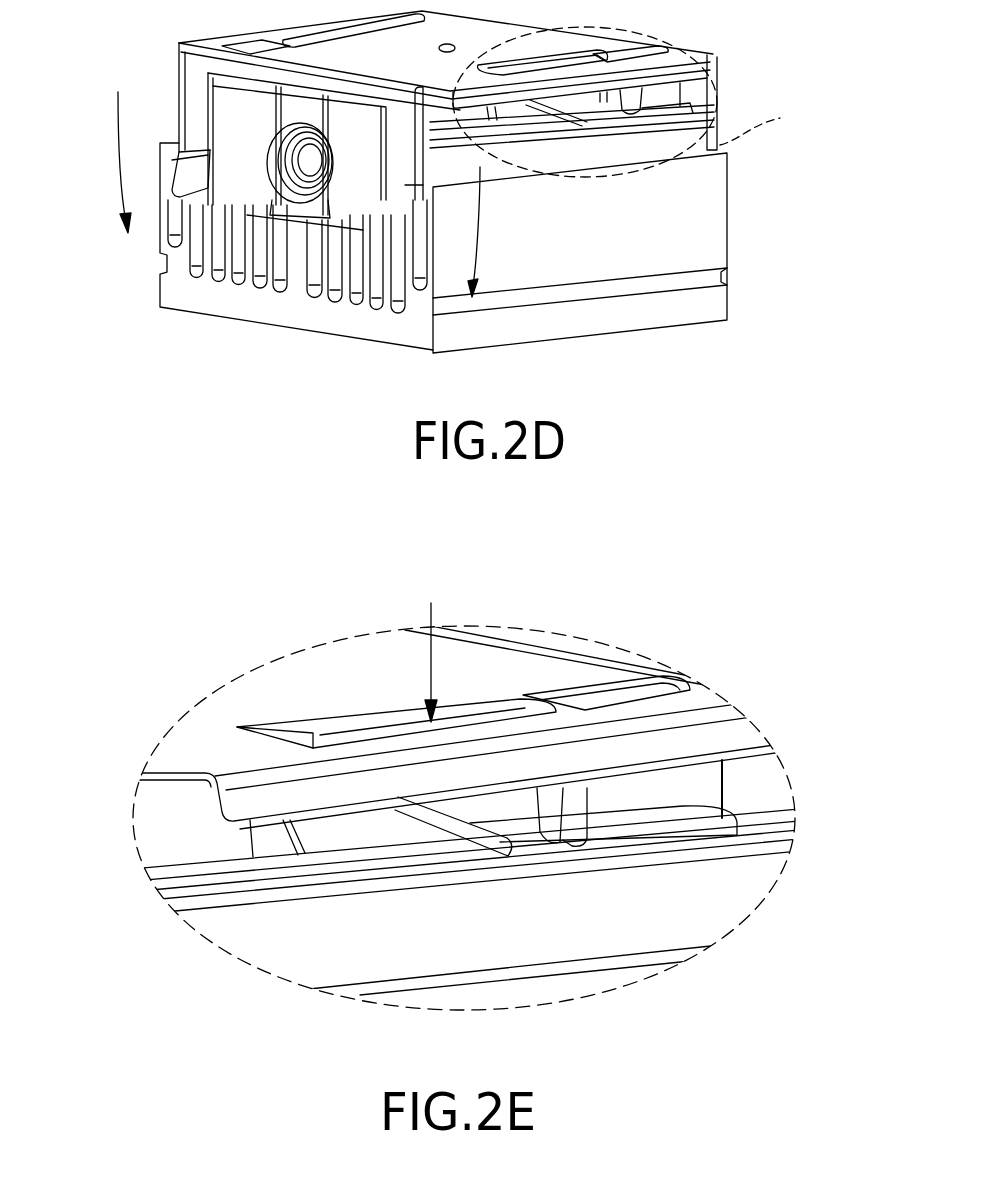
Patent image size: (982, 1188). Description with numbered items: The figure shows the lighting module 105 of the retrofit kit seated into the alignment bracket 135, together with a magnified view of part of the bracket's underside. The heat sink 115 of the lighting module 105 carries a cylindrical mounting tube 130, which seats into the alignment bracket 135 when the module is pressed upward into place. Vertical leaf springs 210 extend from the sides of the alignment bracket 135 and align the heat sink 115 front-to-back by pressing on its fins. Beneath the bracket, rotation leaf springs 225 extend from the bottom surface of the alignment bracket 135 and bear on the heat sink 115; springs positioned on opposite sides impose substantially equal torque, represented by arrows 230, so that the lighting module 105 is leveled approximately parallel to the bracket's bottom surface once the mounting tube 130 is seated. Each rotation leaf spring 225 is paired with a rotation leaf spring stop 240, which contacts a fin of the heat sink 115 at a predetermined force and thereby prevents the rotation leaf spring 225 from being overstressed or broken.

In FIG. 2D, the lighting module 105 is at (461, 201).
In FIG. 2D, the heat sink 115 is at (727, 232).
In FIG. 2D, the mounting tube 130 is at (347, 173).
In FIG. 2D, the alignment bracket 135 is at (720, 70).
In FIG. 2D, the vertical leaf spring 210 is at (186, 92).
In FIG. 2E, the rotation leaf spring 225 is at (425, 832).
In FIG. 2D, the arrows representing torque 230 is at (118, 97).
In FIG. 2E, the arrows representing torque 230 is at (429, 663).
In FIG. 2E, the rotation leaf spring stop 240 is at (570, 813).